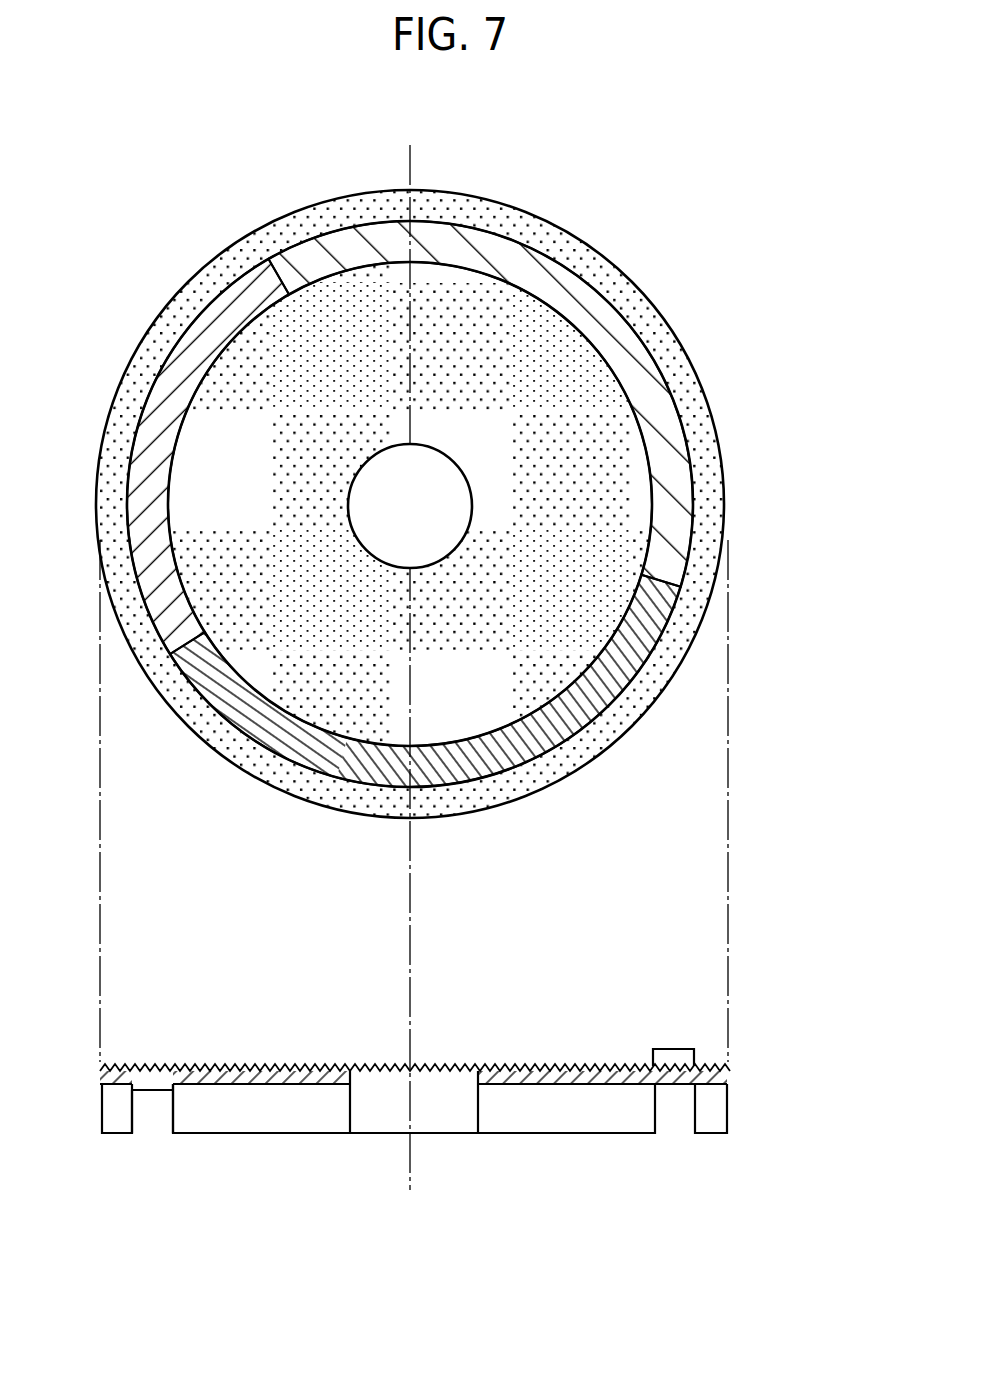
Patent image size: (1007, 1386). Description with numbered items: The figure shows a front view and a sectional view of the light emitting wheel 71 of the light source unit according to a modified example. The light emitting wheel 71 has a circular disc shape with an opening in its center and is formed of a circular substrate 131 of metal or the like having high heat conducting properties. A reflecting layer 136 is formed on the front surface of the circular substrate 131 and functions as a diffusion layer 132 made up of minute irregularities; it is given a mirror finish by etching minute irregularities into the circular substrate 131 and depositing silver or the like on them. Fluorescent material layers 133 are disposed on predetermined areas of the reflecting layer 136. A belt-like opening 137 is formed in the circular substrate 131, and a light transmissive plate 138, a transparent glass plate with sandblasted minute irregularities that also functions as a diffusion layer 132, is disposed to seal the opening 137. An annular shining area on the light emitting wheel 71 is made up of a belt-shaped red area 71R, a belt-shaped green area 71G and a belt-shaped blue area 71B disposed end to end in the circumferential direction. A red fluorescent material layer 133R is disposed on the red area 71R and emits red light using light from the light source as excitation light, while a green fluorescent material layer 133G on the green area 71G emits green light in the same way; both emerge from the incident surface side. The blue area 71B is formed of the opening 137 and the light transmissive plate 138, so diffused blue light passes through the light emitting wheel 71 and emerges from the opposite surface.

The light emitting wheel 71 is at (447, 650).
The blue area 71B is at (180, 377).
The green area 71G is at (352, 248).
The red area 71R is at (548, 730).
The circular substrate 131 is at (615, 1113).
The diffusion layer 132 is at (415, 611).
The fluorescent material layers 133 is at (672, 1052).
The green fluorescent material layer 133G is at (481, 338).
The red fluorescent material layer 133R is at (425, 739).
The reflecting layer 136 is at (517, 343).
The opening 137 is at (155, 1113).
The light transmissive plate 138 is at (157, 1077).